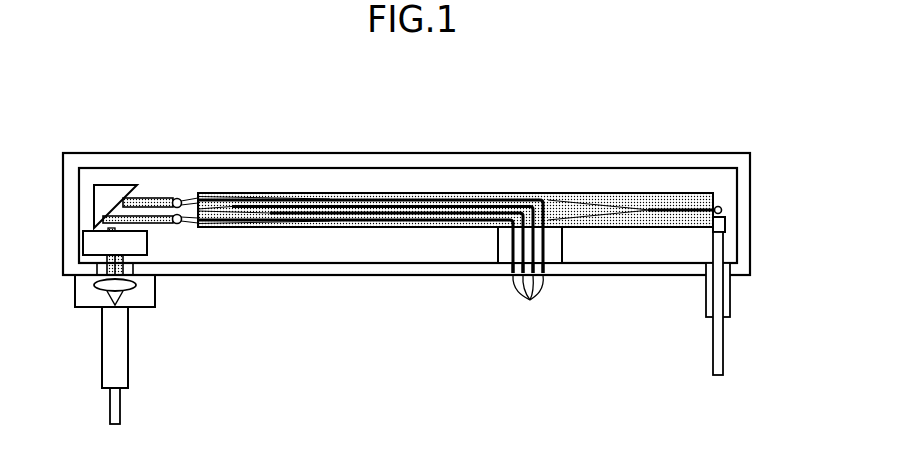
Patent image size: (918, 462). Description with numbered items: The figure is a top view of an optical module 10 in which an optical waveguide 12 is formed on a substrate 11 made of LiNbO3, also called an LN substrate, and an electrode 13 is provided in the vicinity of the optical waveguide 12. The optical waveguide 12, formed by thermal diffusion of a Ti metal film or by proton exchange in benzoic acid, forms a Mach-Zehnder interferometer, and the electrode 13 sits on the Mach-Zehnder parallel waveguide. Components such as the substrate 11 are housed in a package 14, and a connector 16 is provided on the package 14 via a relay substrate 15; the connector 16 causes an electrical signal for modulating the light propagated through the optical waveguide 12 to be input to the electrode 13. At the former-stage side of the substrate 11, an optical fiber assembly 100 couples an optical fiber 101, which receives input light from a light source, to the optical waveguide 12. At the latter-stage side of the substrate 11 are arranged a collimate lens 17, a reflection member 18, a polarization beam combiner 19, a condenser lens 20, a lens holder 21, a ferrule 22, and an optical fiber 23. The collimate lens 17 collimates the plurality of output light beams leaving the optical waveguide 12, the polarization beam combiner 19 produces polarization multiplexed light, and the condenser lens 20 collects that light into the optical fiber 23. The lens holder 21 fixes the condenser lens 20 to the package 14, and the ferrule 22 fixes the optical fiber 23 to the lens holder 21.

The optical module 10 is at (549, 126).
The substrate 11 is at (697, 205).
The optical waveguide 12 is at (668, 205).
The electrode 13 is at (458, 198).
The package 14 is at (489, 163).
The relay substrate 15 is at (568, 250).
The connector 16 is at (528, 297).
The collimate lens 17 is at (158, 200).
The reflection member 18 is at (94, 205).
The polarization beam combiner 19 is at (83, 243).
The condenser lens 20 is at (96, 284).
The lens holder 21 is at (75, 297).
The ferrule 22 is at (102, 350).
The optical fiber 23 is at (110, 405).
The optical fiber assembly 100 is at (727, 224).
The optical fiber 101 is at (723, 350).